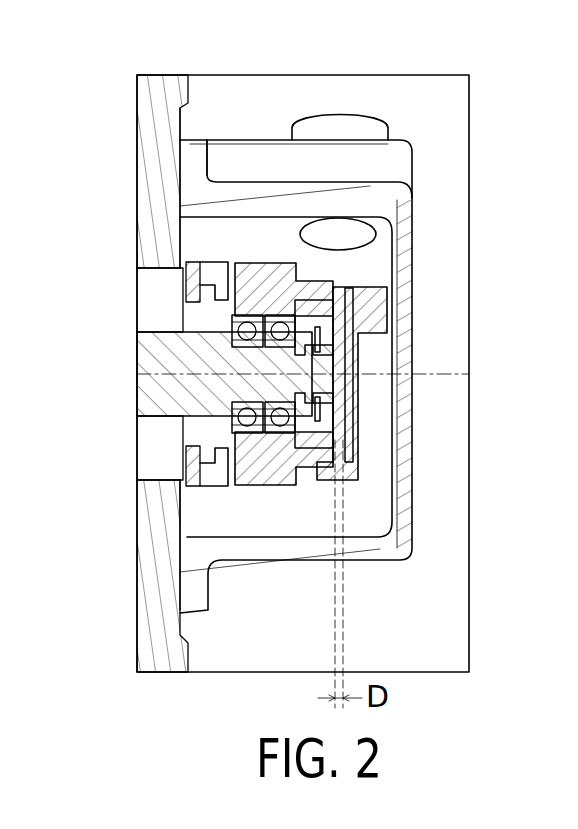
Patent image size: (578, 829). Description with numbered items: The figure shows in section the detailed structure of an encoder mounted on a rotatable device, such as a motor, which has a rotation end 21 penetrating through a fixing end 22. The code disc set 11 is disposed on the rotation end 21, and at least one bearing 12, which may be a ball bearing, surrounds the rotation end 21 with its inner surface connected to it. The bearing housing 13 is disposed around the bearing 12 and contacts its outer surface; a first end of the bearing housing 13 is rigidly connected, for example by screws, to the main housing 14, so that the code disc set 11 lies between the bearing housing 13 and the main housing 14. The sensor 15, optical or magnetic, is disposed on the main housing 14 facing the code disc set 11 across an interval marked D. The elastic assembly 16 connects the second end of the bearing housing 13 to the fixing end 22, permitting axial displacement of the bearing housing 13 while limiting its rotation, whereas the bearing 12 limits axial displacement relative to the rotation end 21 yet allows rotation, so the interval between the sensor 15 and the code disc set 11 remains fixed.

The code disc set 11 is at (347, 290).
The bearing 12 is at (273, 316).
The bearing housing 13 is at (292, 280).
The main housing 14 is at (347, 472).
The sensor 15 is at (352, 380).
The elastic assembly 16 is at (205, 265).
The rotation end 21 is at (150, 385).
The fixing end 22 is at (150, 550).